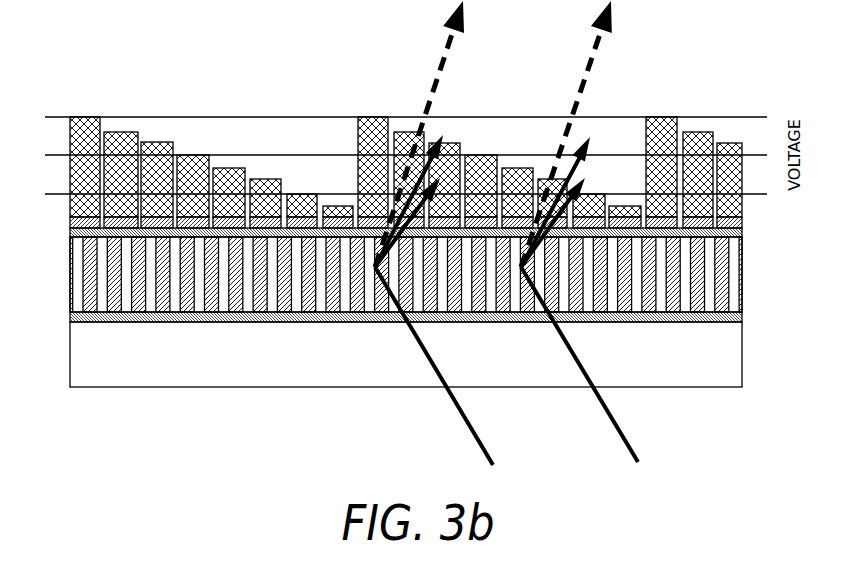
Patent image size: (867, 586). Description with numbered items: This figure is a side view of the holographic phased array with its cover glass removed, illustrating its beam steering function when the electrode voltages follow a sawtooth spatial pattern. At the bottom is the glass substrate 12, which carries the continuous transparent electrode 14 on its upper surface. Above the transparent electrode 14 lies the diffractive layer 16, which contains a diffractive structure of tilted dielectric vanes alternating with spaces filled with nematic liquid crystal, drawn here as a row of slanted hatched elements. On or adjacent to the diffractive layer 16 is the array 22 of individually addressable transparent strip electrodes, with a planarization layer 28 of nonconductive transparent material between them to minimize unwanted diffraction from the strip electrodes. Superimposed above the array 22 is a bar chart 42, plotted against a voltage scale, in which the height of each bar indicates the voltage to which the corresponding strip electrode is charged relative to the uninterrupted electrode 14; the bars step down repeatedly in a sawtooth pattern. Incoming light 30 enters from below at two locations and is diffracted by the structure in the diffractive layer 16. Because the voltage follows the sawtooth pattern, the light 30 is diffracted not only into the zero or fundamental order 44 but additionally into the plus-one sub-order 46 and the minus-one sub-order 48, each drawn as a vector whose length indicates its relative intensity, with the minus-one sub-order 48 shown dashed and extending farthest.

The glass substrate 12 is at (78, 355).
The continuous transparent electrode 14 is at (75, 317).
The diffractive layer 16 is at (64, 272).
The array of strip electrodes 22 is at (64, 222).
The planarization layer 28 is at (70, 231).
The light 30 is at (478, 428).
The bar chart 42 is at (50, 139).
The zero (fundamental) order beam 44 is at (439, 138).
The +1 sub-order 46 is at (449, 170).
The −1 sub-order 48 is at (441, 57).